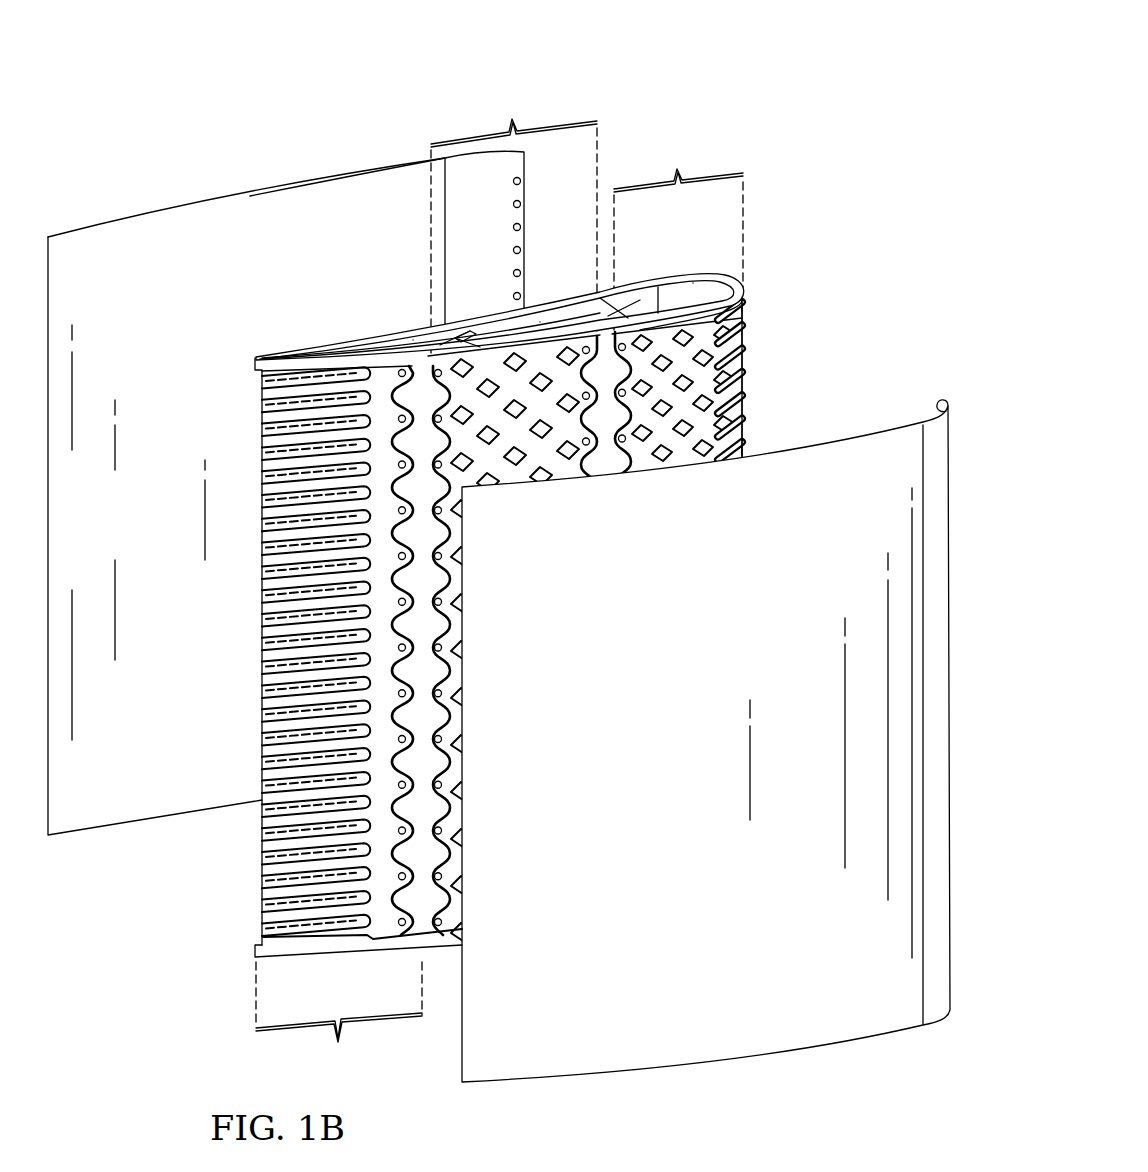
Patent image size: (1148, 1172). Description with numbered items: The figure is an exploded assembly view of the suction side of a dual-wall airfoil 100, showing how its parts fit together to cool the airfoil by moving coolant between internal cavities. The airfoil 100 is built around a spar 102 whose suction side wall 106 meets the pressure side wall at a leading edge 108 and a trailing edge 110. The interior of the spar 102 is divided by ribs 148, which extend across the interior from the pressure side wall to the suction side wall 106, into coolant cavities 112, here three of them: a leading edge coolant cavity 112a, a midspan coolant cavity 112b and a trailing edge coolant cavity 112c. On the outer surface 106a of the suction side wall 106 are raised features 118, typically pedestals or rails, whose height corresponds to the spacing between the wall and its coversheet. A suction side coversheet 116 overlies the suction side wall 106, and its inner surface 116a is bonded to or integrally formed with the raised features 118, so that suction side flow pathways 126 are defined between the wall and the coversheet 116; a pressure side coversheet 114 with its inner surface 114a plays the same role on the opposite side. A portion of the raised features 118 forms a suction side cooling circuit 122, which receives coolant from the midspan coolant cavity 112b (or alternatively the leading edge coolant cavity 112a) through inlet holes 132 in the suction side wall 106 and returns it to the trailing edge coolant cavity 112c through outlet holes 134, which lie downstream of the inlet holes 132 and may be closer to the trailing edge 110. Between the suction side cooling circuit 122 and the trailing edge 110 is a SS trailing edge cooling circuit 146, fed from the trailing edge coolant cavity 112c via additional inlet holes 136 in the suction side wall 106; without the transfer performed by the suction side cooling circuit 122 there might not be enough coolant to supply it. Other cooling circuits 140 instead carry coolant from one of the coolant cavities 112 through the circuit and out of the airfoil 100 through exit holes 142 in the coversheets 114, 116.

The dual-wall airfoil 100 is at (768, 76).
The spar 102 is at (268, 318).
The suction side wall 106 is at (748, 322).
The outer surface 106a is at (743, 440).
The leading edge 108 is at (762, 280).
The trailing edge 110 is at (226, 855).
The coolant cavities 112 is at (500, 226).
The leading edge coolant cavity 112a is at (690, 290).
The midspan coolant cavity 112b is at (540, 322).
The trailing edge coolant cavity 112c is at (413, 340).
The pressure side coversheet 114 is at (258, 197).
The inner surface 114a is at (368, 187).
The suction side coversheet 116 is at (740, 1058).
The inner surface 116a is at (936, 409).
The raised features 118 is at (780, 382).
The suction side cooling circuit 122 is at (514, 226).
The suction side flow pathways 126 is at (742, 347).
The inlet holes 132 is at (593, 343).
The outlet holes 134 is at (452, 335).
The additional inlet holes 136 is at (398, 374).
The cooling circuits 140 is at (678, 239).
The exit holes 142 is at (514, 250).
The SS trailing edge cooling circuit 146 is at (339, 1017).
The ribs 148 is at (503, 340).